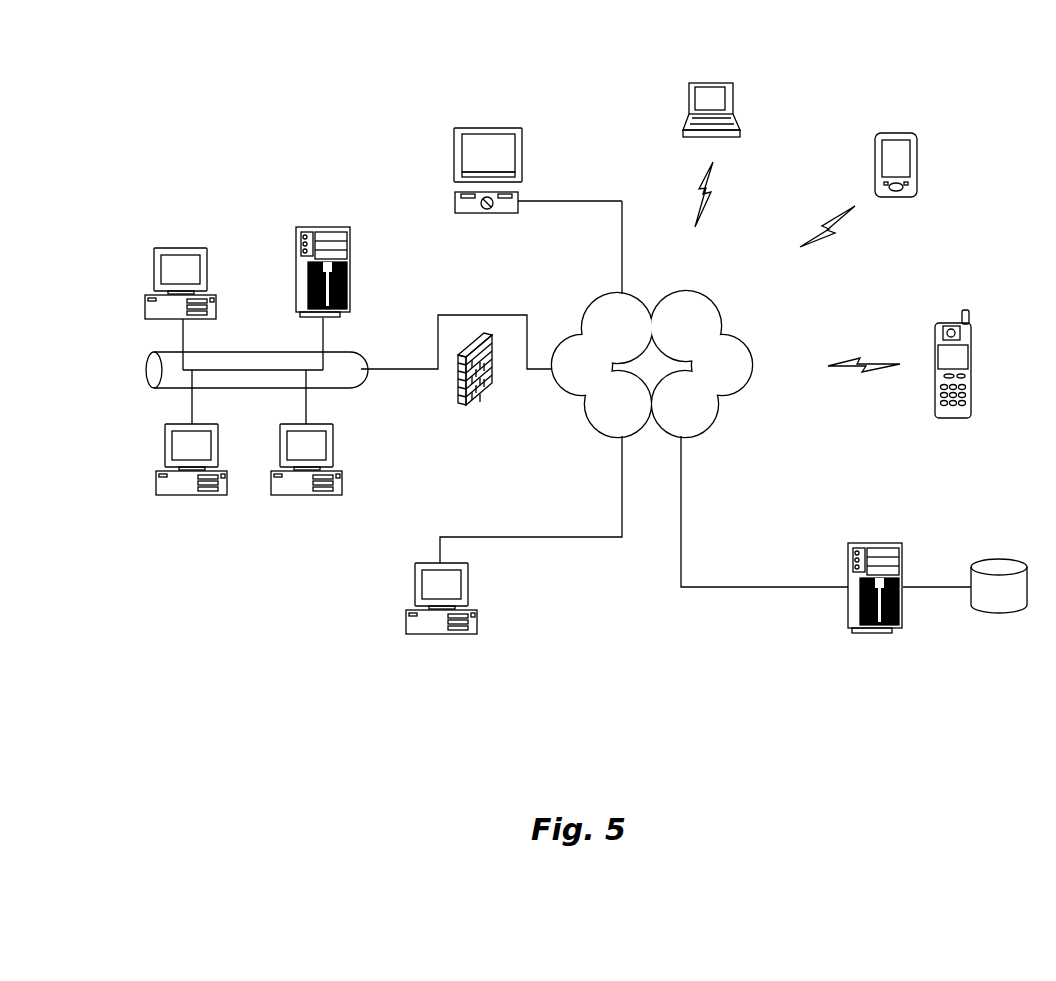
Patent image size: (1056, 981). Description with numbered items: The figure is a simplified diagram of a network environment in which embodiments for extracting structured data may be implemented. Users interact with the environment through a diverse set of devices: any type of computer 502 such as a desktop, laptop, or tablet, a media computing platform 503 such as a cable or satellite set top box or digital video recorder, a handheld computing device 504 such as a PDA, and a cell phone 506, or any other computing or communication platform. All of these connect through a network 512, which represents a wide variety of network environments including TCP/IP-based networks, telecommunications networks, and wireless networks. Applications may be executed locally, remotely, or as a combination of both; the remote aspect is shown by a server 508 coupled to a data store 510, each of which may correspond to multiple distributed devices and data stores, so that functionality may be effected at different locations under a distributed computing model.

The computer 502 is at (156, 273).
The media computing platform 503 is at (455, 200).
The handheld computing device 504 is at (880, 133).
The cell phone 506 is at (937, 328).
The server 508 is at (858, 543).
The data store 510 is at (1000, 558).
The network 512 is at (596, 307).